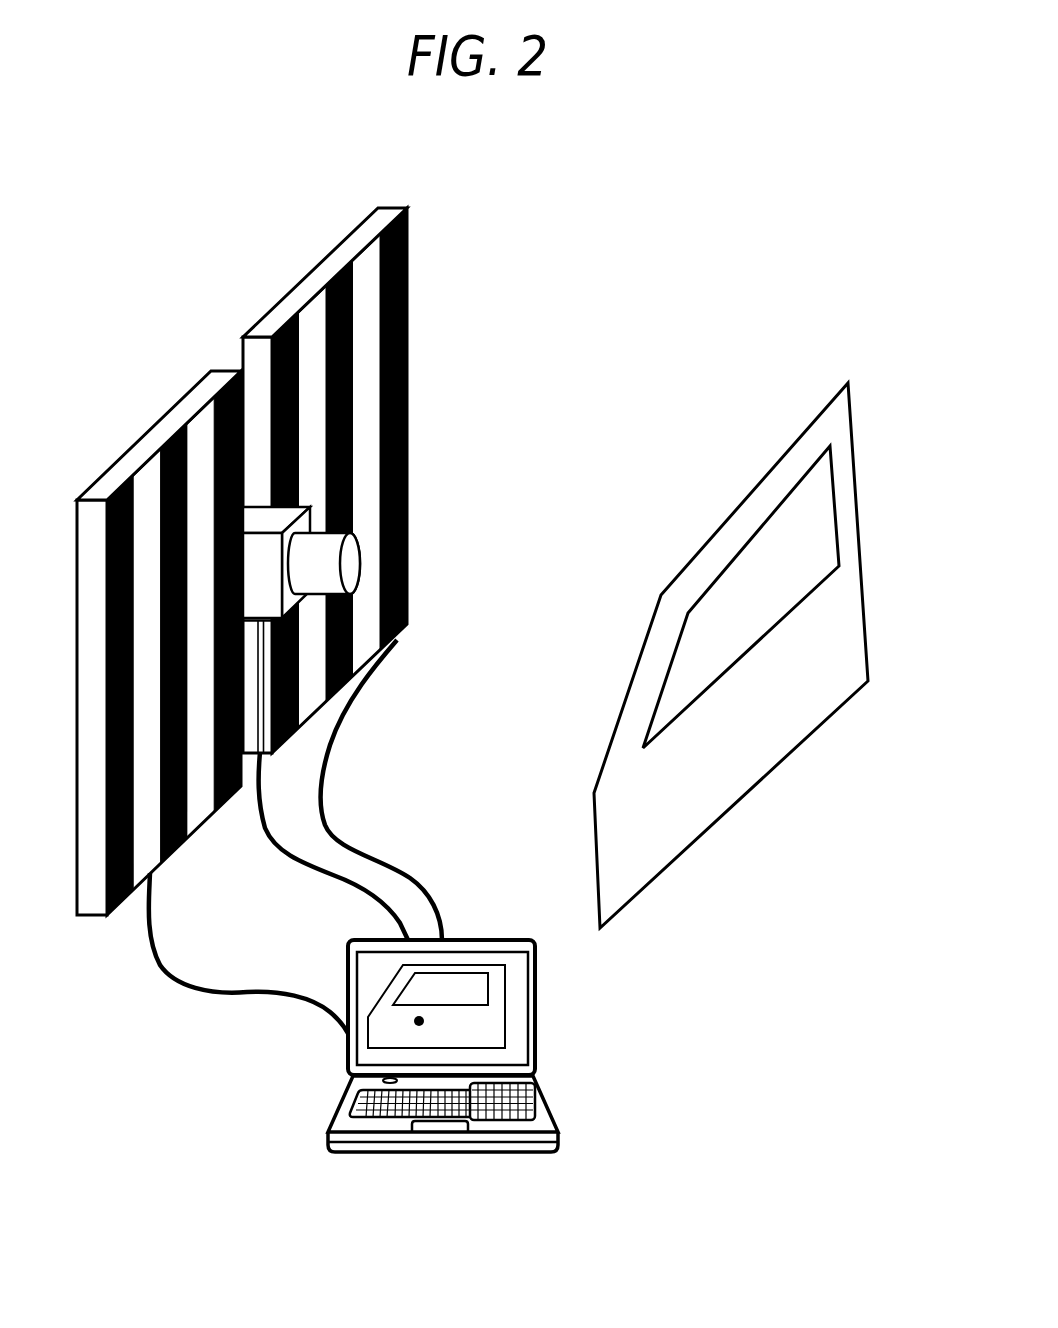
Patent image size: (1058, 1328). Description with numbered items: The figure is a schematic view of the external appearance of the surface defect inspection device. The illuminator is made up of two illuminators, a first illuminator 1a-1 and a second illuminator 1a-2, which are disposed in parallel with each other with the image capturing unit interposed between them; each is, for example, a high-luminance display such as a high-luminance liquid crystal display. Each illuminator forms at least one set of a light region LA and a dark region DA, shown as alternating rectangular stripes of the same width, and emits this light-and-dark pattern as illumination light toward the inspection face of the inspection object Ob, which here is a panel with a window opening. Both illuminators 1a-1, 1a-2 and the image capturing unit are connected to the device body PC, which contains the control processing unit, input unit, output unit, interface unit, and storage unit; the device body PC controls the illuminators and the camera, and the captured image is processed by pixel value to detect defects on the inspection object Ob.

The first illuminator 1a-1 is at (375, 445).
The second illuminator 1a-2 is at (123, 900).
The dark region DA is at (340, 293).
The light region LA is at (368, 267).
The inspection object Ob is at (776, 480).
The device body PC is at (541, 1094).